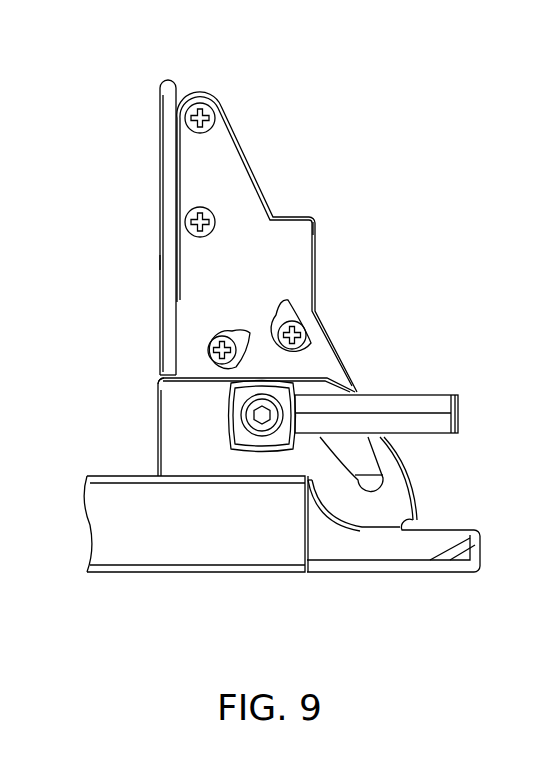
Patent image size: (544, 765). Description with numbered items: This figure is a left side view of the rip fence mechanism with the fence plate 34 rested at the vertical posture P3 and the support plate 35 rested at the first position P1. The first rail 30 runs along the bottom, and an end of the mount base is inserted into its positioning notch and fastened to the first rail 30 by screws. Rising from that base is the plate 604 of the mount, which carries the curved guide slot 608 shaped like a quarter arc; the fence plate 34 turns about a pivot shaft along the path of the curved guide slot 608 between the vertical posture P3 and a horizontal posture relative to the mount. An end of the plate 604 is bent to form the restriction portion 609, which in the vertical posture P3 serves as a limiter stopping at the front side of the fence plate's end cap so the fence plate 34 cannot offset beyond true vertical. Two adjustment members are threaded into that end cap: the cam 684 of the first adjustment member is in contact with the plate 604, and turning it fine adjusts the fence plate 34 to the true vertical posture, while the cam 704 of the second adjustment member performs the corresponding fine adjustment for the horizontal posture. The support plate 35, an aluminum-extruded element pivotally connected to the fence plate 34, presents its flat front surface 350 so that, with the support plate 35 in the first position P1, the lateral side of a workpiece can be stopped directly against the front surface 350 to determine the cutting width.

The first rail 30 is at (165, 542).
The fence plate 34 is at (247, 148).
The support plate 35 is at (168, 180).
The front surface 350 is at (160, 105).
The first position P1 is at (157, 263).
The vertical posture P3 is at (320, 217).
The plate 604 is at (187, 413).
The curved guide slot 608 is at (383, 450).
The restriction portion 609 is at (162, 382).
The cam 684 is at (200, 337).
The cam 704 is at (315, 337).